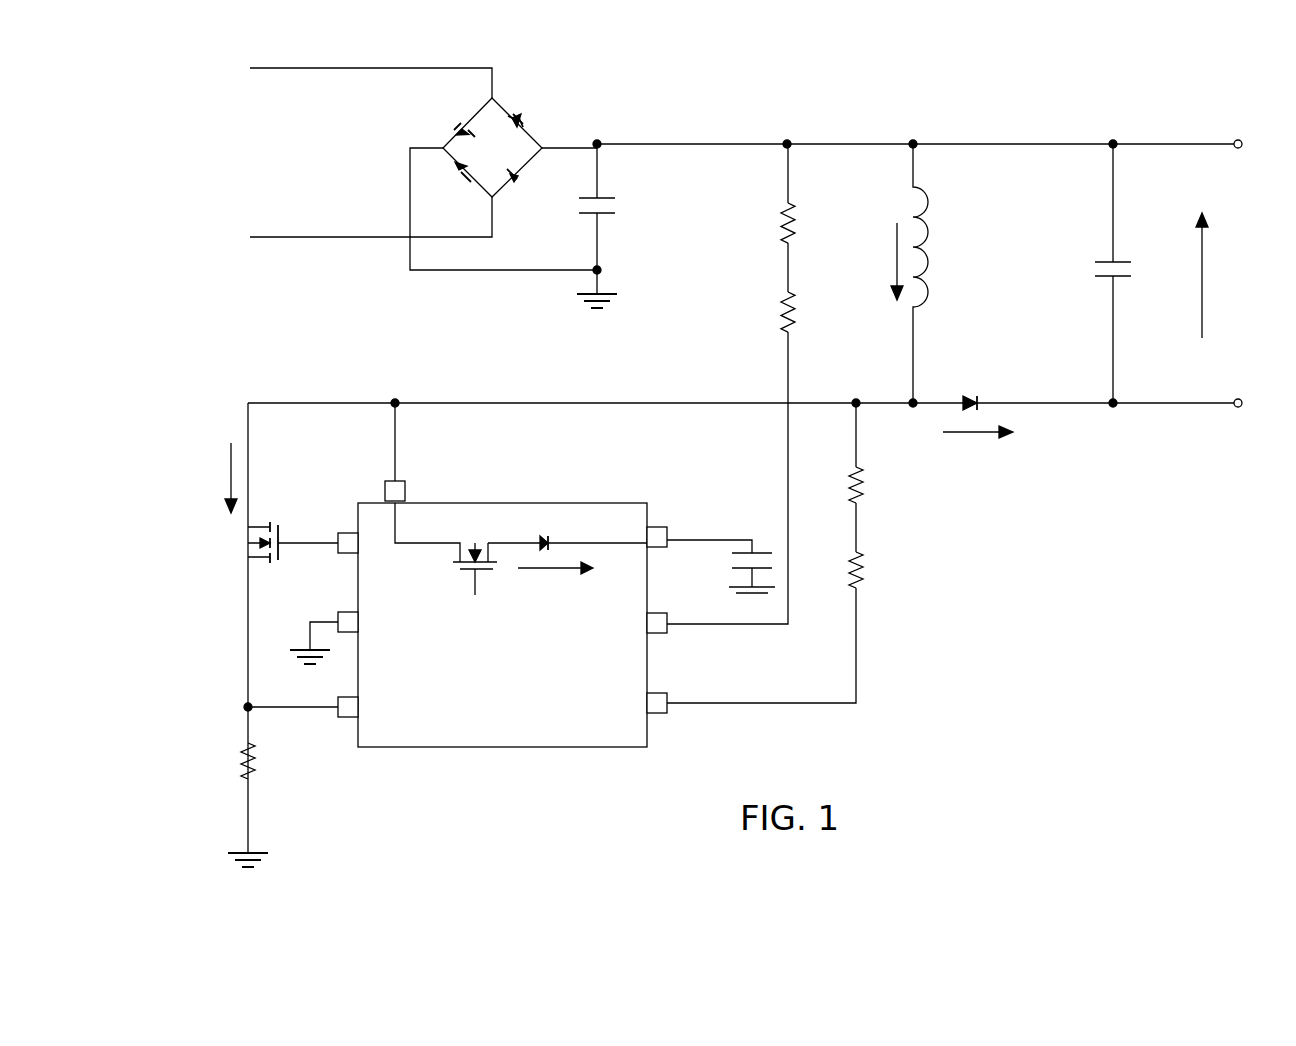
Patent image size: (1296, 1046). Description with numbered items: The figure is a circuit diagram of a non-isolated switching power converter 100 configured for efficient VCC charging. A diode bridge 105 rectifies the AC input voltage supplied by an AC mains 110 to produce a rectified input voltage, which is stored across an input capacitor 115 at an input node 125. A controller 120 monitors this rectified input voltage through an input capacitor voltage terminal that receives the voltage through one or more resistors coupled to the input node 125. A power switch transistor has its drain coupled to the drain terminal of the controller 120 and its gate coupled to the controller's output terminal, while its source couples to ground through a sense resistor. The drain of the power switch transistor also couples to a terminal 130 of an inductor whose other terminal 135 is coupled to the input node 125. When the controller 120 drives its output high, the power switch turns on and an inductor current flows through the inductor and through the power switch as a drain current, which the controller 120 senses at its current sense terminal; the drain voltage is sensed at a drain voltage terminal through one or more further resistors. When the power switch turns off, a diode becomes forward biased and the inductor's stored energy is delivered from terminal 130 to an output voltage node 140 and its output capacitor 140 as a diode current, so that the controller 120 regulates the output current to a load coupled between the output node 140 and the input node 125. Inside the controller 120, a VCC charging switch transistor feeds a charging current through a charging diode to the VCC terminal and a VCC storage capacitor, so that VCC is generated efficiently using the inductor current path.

The non-isolated switching power converter 100 is at (747, 41).
The diode bridge 105 is at (537, 122).
The AC mains 110 is at (232, 68).
The input capacitor 115 is at (630, 210).
The controller 120 is at (513, 748).
The input node 125 is at (707, 144).
The terminal of inductor L 130 is at (917, 399).
The another terminal of inductor L 135 is at (913, 144).
The output voltage node / output capacitor 140 is at (1089, 269).